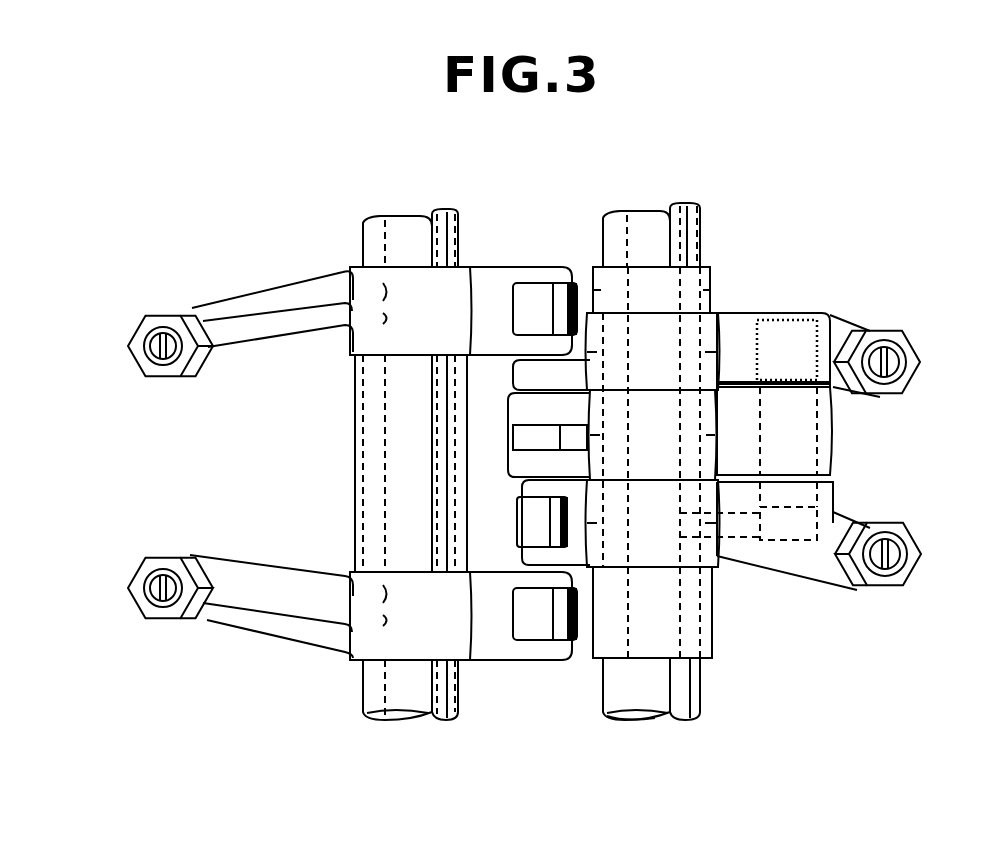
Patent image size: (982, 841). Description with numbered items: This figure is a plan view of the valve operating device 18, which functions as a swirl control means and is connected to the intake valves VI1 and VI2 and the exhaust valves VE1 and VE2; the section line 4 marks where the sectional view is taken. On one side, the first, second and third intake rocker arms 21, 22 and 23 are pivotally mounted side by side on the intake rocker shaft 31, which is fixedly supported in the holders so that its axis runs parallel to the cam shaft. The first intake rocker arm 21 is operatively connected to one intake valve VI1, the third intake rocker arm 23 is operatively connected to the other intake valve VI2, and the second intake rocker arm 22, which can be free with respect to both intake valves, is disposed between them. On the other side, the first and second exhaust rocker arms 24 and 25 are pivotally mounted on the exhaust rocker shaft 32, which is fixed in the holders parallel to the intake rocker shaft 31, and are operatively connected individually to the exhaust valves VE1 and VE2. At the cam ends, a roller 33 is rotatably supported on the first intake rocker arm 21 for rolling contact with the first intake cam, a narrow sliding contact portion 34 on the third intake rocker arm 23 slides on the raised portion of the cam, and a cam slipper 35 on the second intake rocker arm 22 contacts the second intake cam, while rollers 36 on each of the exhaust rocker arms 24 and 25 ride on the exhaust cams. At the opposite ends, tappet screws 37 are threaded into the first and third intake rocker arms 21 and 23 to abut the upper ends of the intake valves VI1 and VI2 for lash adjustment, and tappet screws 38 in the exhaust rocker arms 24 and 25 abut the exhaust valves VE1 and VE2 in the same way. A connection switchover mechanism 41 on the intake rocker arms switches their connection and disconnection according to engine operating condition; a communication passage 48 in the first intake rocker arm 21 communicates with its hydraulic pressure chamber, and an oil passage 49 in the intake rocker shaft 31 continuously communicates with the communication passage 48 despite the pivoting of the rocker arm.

The valve operating device 18 is at (725, 245).
The first intake rocker arm 21 is at (757, 547).
The second intake rocker arm 22 is at (827, 437).
The third intake rocker arm 23 is at (743, 317).
The first exhaust rocker arm 24 is at (263, 628).
The second exhaust rocker arm 25 is at (280, 298).
The intake rocker shaft 31 is at (693, 693).
The exhaust rocker shaft 32 is at (367, 702).
The roller 33 is at (523, 522).
The sliding contact portion 34 is at (523, 373).
The cam slipper 35 is at (523, 460).
The rollers 36 is at (525, 290).
The tappet screws 37 is at (905, 377).
The tappet screws 38 is at (145, 355).
The connection switchover mechanism 41 is at (823, 465).
The communication passage 48 is at (733, 538).
The oil passage 49 is at (675, 723).
The section line 4- 4 is at (787, 220).
The exhaust valve VE1 is at (138, 552).
The exhaust valve VE2 is at (135, 311).
The intake valve VI1 is at (910, 580).
The intake valve VI2 is at (894, 325).